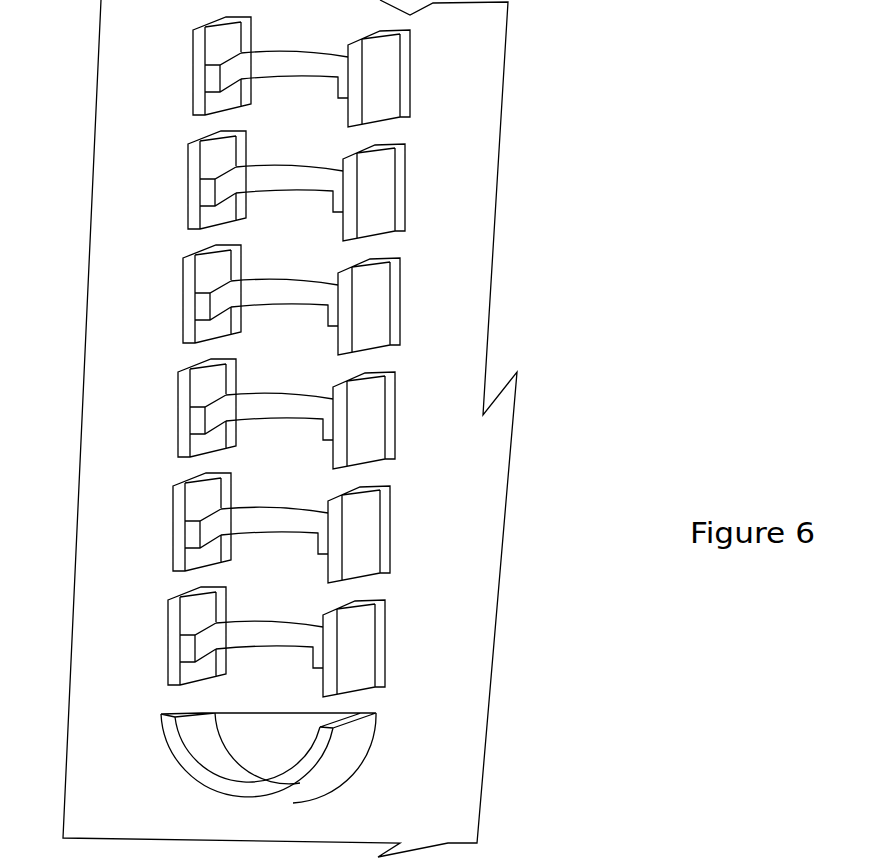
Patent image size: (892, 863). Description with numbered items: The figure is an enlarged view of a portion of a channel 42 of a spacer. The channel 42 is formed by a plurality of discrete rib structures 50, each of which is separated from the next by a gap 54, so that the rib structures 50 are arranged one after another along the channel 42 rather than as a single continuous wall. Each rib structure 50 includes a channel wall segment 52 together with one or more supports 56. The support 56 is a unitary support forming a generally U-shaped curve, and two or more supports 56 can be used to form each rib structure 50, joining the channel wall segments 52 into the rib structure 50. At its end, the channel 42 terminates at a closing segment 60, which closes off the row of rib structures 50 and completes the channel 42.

The channel 42 is at (283, 135).
The rib structure 50 is at (412, 76).
The channel wall segment 52 is at (400, 318).
The gap 54 is at (352, 243).
The support 56 is at (263, 178).
The closing segment 60 is at (337, 767).